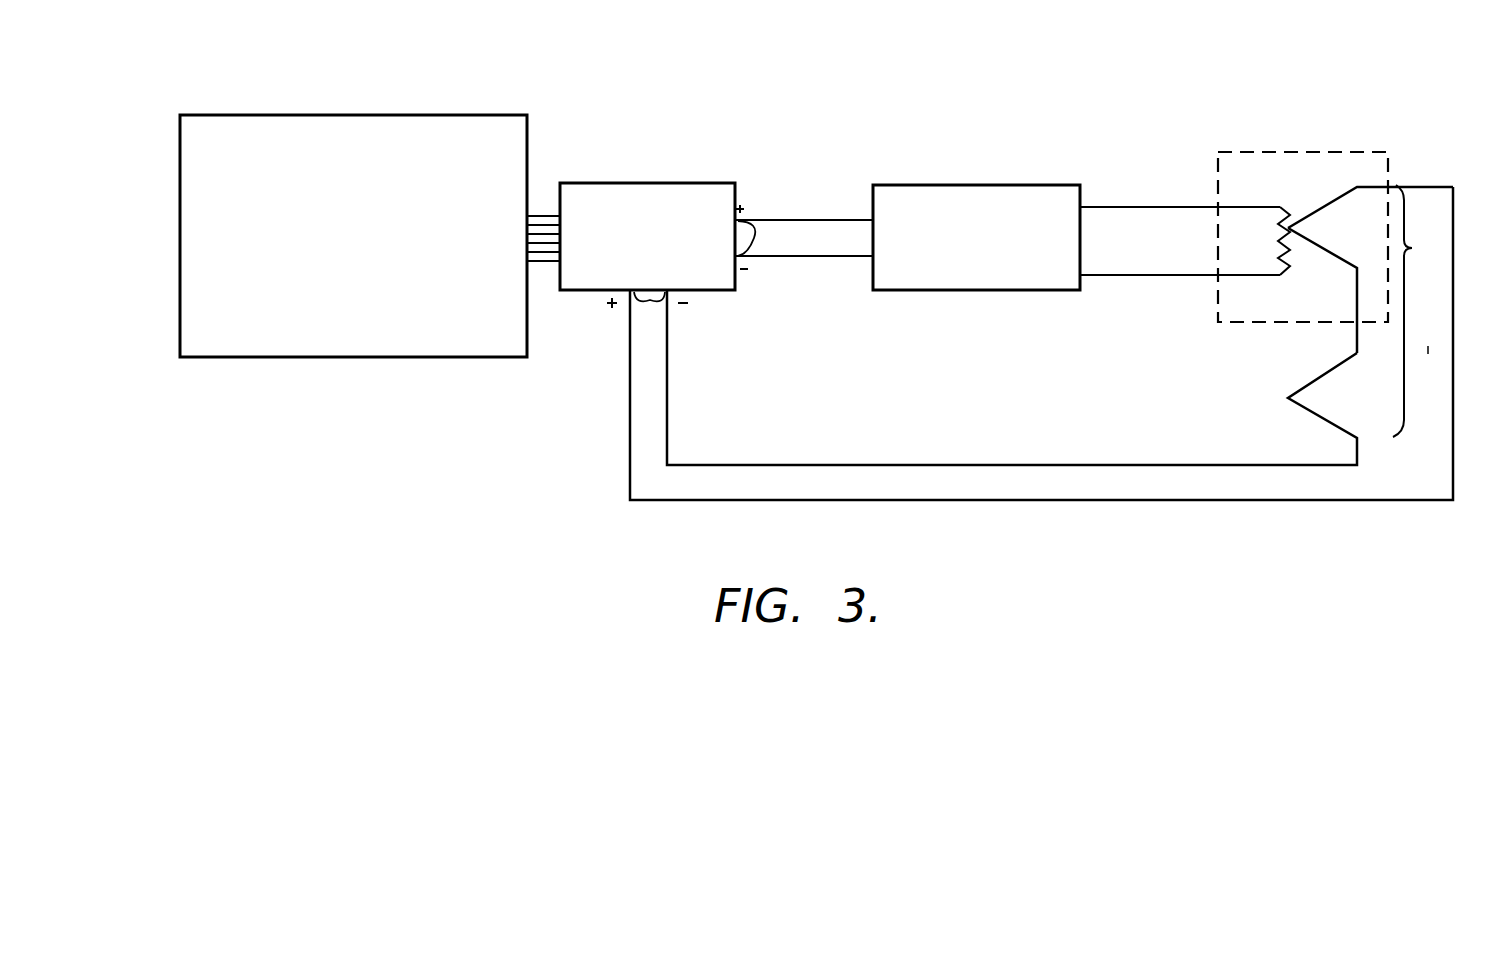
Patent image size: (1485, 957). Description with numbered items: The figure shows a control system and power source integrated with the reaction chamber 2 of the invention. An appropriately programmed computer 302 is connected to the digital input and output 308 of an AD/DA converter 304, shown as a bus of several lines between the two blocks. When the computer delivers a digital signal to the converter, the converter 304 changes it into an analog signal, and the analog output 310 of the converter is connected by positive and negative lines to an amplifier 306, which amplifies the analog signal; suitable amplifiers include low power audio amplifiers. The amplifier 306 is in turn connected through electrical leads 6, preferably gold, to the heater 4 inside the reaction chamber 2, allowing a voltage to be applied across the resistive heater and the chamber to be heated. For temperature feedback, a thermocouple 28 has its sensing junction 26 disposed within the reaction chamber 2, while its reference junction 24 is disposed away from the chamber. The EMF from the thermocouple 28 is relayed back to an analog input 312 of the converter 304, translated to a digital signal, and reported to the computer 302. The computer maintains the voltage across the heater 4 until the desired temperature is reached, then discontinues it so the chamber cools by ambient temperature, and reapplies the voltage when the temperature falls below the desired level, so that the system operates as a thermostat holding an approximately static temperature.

The reaction chamber 2 is at (1236, 148).
The heater 4 is at (1278, 240).
The electrical leads 6 is at (1118, 207).
The reference junction 24 is at (1294, 398).
The sensing junction 26 is at (1292, 226).
The thermocouple 28 is at (1420, 311).
The computer 302 is at (395, 115).
The AD/DA converter 304 is at (650, 183).
The amplifier 306 is at (968, 185).
The digital input and output 308 is at (558, 266).
The analog output 310 is at (754, 238).
The analog input 312 is at (650, 302).